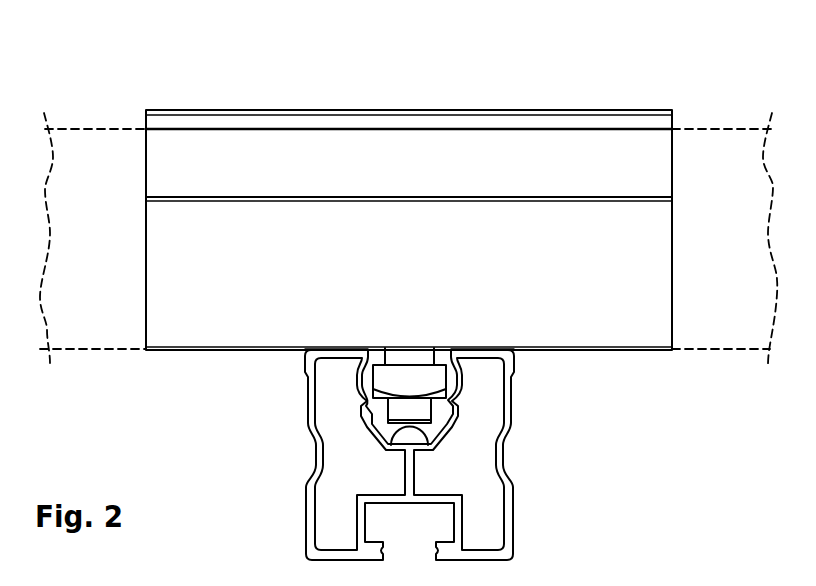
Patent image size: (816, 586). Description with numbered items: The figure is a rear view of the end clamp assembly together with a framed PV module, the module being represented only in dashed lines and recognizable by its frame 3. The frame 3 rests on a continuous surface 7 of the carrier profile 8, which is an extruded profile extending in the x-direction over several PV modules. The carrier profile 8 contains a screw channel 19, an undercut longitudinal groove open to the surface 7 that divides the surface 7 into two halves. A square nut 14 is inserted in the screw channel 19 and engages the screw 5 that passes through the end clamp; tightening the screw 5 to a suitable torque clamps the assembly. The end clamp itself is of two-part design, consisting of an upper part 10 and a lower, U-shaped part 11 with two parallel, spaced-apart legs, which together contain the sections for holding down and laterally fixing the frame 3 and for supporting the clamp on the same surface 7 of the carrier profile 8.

The frame 3 is at (716, 128).
The upper part 10 is at (606, 109).
The lower U-shaped part 11 is at (608, 351).
The continuous surface 7 is at (355, 341).
The carrier profile 8 is at (303, 402).
The screw 5 is at (367, 407).
The square nut 14 is at (440, 403).
The screw channel 19 is at (385, 440).